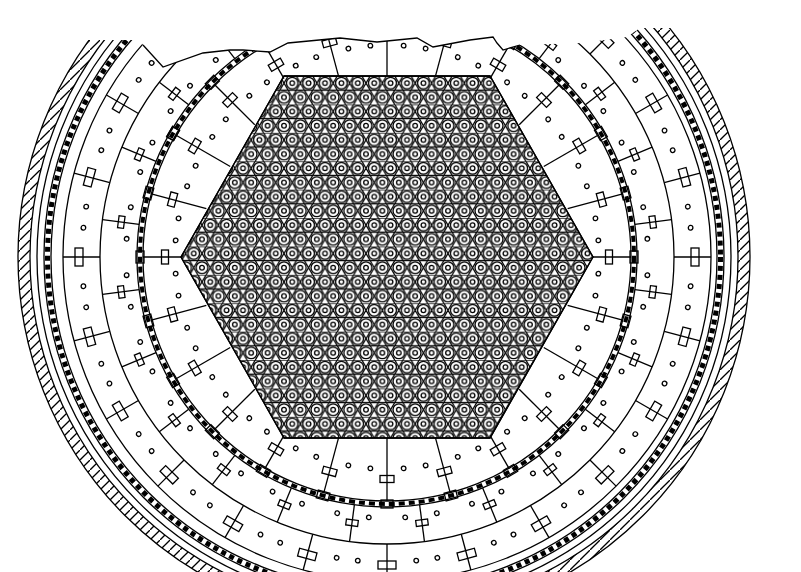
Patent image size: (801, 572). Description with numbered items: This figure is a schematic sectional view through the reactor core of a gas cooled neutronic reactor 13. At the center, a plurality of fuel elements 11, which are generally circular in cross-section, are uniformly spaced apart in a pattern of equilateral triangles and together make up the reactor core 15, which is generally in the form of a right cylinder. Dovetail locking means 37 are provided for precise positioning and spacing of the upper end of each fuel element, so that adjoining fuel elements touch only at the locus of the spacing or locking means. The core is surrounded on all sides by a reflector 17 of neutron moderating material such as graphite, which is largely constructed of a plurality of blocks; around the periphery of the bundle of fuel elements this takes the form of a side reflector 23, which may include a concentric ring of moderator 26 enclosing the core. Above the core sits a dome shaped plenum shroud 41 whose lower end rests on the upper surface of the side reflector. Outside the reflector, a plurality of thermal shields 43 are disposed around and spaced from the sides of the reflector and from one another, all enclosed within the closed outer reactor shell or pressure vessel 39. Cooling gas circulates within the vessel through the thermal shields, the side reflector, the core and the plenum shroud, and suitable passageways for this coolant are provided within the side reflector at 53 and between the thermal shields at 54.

The fuel elements 11 is at (618, 276).
The gas cooled neutronic reactor 13 is at (630, 80).
The reactor core 15 is at (585, 232).
The reflector 17 is at (110, 404).
The side reflector 23 is at (540, 487).
The concentric ring of moderator 26 is at (540, 437).
The dovetail locking means 37 is at (545, 186).
The outer reactor shell or pressure vessel 39 is at (722, 402).
The plenum shroud 41 is at (536, 57).
The thermal shields 43 is at (717, 351).
The coolant passageways in the side reflector 53 is at (640, 287).
The coolant passageways between the thermal shields 54 is at (703, 117).